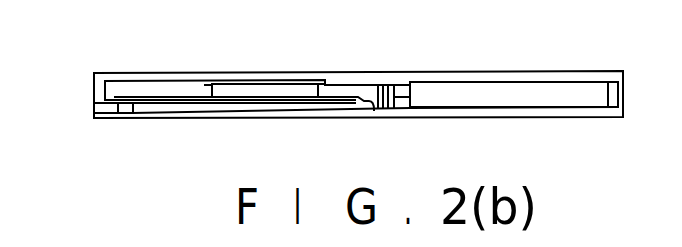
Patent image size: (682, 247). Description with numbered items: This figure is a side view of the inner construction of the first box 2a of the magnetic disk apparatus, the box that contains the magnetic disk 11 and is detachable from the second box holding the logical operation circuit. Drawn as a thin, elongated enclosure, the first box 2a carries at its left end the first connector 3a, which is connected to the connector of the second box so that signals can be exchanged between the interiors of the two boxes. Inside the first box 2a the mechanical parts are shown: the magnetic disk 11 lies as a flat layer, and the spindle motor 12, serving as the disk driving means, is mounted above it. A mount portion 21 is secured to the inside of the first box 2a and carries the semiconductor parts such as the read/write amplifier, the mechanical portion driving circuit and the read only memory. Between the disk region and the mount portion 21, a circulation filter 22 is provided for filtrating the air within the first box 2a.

The first box 2a is at (563, 68).
The mount portion 21 is at (507, 100).
The first connector 3a is at (93, 108).
The spindle motor 12 is at (227, 88).
The magnetic disk 11 is at (372, 110).
The circulation filter 22 is at (395, 85).